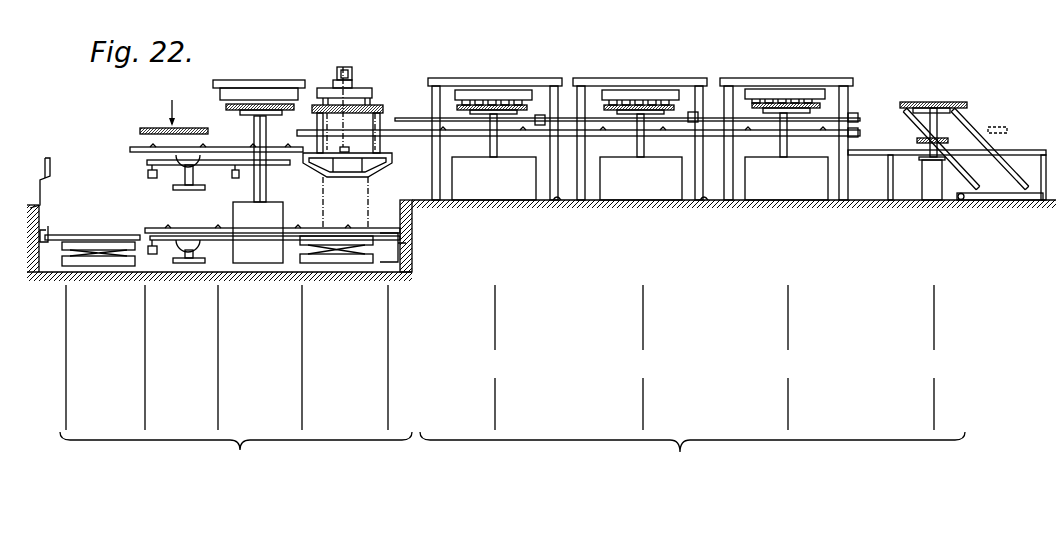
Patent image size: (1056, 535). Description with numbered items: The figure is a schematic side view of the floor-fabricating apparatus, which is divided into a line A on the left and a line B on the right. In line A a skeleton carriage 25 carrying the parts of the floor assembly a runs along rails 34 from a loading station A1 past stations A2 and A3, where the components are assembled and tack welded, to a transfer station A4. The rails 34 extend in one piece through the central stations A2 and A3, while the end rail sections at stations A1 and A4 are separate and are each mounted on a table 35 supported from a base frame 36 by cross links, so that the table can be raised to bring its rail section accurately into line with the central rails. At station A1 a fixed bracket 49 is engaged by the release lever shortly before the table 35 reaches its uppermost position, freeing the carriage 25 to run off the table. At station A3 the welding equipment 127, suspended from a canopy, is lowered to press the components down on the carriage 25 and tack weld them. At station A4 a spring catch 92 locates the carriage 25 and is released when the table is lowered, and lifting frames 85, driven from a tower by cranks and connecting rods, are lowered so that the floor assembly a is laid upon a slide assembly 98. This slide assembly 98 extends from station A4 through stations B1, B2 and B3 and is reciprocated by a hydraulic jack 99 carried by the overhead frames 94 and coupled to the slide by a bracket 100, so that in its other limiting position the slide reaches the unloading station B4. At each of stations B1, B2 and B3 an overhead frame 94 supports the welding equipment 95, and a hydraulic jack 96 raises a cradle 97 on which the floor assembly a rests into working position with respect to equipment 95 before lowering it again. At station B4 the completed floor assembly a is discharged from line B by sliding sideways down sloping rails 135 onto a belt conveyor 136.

The fixed bracket 49 is at (50, 170).
The skeleton carriage 25 is at (133, 148).
The floor assembly a is at (152, 128).
The rails 34 is at (147, 163).
The table 35 is at (100, 245).
The base frame 36 is at (118, 264).
The welding equipment 127 is at (262, 92).
The lifting frame 85 is at (386, 168).
The spring catch 92 is at (408, 243).
The slide assembly 98 is at (402, 116).
The welding equipment 95 is at (495, 98).
The cradle 97 is at (490, 116).
The reciprocating hydraulic motor or jack 96 is at (517, 191).
The bracket 100 is at (540, 125).
The overhead frame 94 is at (567, 204).
The reciprocating hydraulic motor or jack 99 is at (832, 113).
The sloping rails 135 is at (950, 145).
The belt conveyor 136 is at (1007, 189).
The loading station A1 is at (105, 374).
The station A2 is at (176, 374).
The station A3 is at (250, 374).
The transfer station A4 is at (338, 374).
The station B1 is at (492, 369).
The station B2 is at (638, 369).
The station B3 is at (779, 369).
The unloading station B4 is at (922, 369).
The line A is at (233, 470).
The line B is at (670, 465).